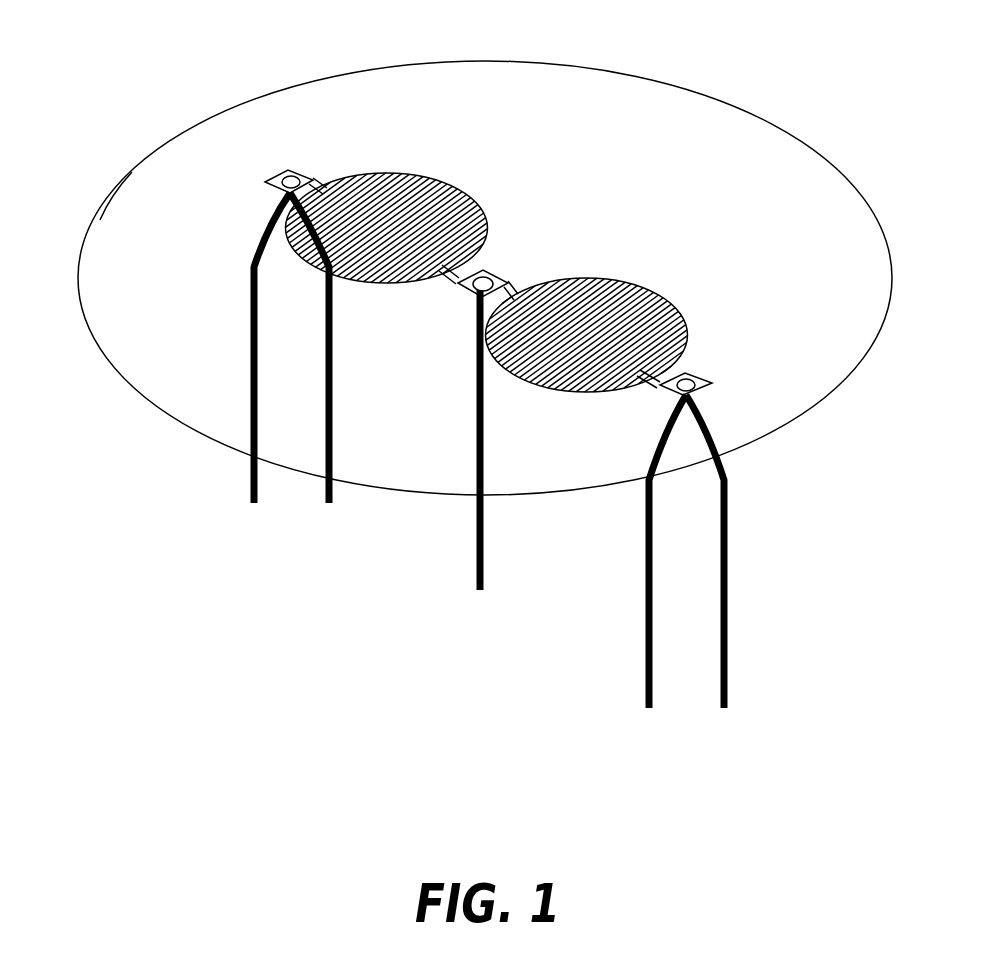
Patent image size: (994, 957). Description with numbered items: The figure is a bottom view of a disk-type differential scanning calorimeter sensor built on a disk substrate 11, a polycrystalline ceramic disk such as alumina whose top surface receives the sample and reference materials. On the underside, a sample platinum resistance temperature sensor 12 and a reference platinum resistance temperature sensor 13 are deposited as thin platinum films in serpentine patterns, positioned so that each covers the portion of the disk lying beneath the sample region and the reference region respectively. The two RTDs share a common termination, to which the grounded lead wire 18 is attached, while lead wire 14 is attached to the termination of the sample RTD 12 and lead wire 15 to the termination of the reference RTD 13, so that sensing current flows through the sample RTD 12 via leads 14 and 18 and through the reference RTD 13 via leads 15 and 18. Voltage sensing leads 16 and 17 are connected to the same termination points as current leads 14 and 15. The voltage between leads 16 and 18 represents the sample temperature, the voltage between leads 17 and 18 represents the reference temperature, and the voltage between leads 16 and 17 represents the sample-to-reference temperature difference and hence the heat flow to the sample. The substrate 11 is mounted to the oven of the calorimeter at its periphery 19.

The disk substrate 11 is at (563, 112).
The sample platinum resistance temperature sensor 12 is at (652, 295).
The reference platinum resistance temperature sensor 13 is at (378, 173).
The lead wire 14 is at (652, 697).
The lead wire 15 is at (250, 490).
The voltage sensing lead 16 is at (728, 682).
The voltage sensing lead 17 is at (330, 500).
The lead wire 18 is at (477, 573).
The periphery 19 is at (132, 172).